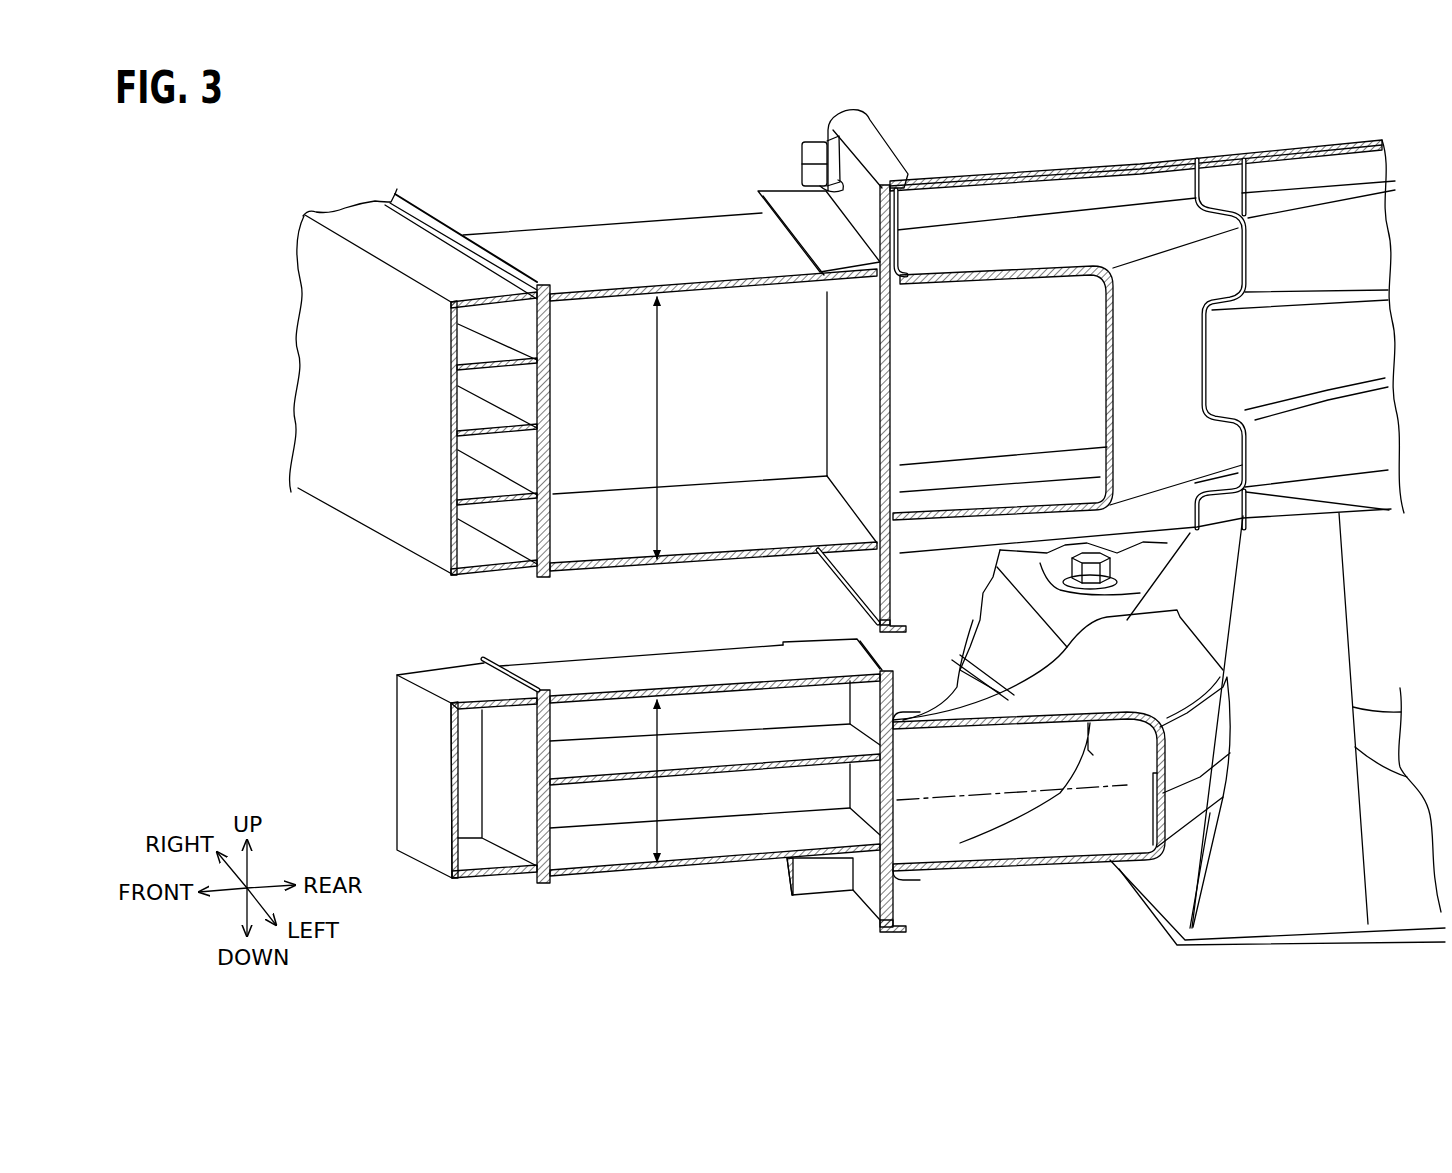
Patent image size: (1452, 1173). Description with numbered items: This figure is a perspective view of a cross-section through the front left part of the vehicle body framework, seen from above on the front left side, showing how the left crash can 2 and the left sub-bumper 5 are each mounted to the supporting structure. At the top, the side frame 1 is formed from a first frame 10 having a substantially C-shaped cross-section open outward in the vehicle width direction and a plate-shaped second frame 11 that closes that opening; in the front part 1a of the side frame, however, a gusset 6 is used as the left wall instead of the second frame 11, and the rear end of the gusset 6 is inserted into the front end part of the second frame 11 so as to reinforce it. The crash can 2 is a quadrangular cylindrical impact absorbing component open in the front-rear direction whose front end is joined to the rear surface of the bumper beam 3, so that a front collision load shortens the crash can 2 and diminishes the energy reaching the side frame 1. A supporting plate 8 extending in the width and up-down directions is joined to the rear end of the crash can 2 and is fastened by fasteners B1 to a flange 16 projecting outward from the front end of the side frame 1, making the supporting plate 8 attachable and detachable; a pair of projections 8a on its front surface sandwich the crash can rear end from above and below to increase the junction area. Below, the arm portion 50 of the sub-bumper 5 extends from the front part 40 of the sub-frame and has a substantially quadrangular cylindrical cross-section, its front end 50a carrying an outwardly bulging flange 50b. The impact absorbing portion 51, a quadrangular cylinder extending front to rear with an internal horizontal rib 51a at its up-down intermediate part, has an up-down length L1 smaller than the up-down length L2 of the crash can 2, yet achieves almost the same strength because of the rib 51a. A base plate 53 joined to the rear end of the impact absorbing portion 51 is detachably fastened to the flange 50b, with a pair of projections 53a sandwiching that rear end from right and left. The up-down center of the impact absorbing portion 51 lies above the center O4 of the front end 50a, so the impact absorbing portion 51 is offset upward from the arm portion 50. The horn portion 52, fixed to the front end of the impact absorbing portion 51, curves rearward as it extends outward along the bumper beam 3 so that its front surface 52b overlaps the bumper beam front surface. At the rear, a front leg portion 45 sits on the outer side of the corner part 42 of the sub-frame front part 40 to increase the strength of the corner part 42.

The side frame 1 is at (1173, 147).
The front part of the left side frame 1a is at (1057, 243).
The crash can 2 is at (605, 248).
The bumper beam 3 is at (284, 355).
The sub-bumper 5 is at (703, 790).
The gusset 6 is at (1150, 300).
The supporting plate 8 is at (862, 182).
The projections 8a is at (790, 205).
The first frame 10 is at (990, 335).
The second frame 11 is at (1328, 233).
The flange 16 is at (897, 212).
The front part of the sub-frame 40 is at (1398, 870).
The corner part 42 is at (1224, 821).
The front leg portion 45 is at (1307, 554).
The arm portion 50 is at (1032, 862).
The front end of the arm portion 50a is at (920, 873).
The flange 50b is at (897, 922).
The impact absorbing portion 51 is at (643, 673).
The rib 51a is at (750, 747).
The horn portion 52 is at (383, 717).
The front surface of the horn portion 52b is at (412, 772).
The base plate 53 is at (873, 893).
The projections 53a is at (807, 875).
The fasteners B1 is at (803, 158).
The length in the up-down direction of the impact absorbing portion L1 is at (675, 781).
The length in the up-down direction of the left crash can L2 is at (675, 428).
The center in the up-down direction of the front end of the arm portion O4 is at (980, 795).